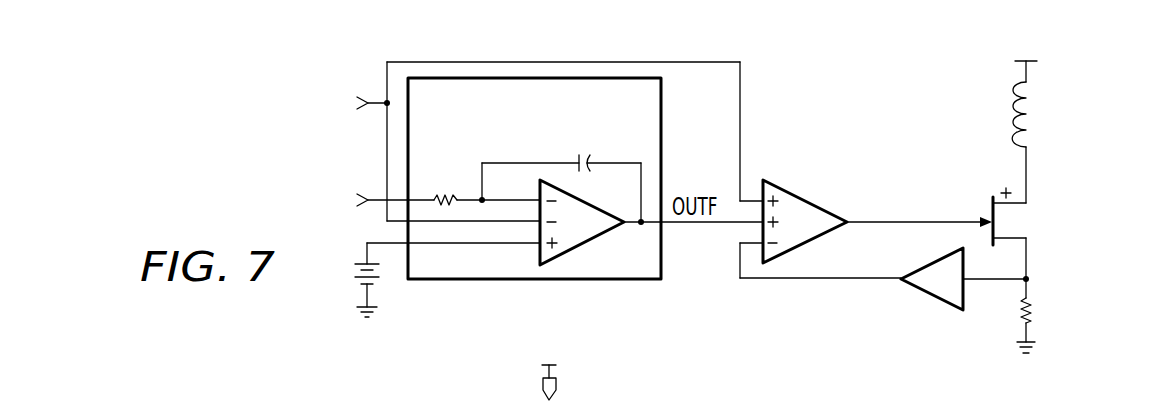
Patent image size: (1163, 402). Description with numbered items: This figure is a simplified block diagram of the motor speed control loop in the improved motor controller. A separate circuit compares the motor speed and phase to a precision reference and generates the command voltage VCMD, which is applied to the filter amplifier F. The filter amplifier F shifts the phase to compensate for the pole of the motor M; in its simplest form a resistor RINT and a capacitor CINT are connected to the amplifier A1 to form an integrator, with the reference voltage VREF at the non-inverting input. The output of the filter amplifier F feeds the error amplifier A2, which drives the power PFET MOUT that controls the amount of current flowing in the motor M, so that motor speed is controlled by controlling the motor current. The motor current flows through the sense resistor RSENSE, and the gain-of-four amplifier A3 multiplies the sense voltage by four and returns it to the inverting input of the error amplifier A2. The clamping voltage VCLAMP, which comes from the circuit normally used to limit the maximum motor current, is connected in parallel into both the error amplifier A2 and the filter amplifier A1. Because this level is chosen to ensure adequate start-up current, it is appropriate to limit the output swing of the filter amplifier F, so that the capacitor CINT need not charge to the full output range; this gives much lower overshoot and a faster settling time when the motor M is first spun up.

The filter amplifier F is at (585, 213).
The amplifier A1 is at (629, 222).
The resistor RINT is at (482, 182).
The capacitor CINT is at (561, 170).
The error amplifier A2 is at (808, 178).
The X4 amplifier A3 is at (963, 270).
The motor M is at (992, 128).
The power PFET MOUT is at (1034, 214).
The sense resistor RSENSE is at (1059, 316).
The reference voltage source VREF is at (420, 280).
The clamping voltage VCLAMP is at (425, 141).
The command voltage VCMD is at (307, 197).